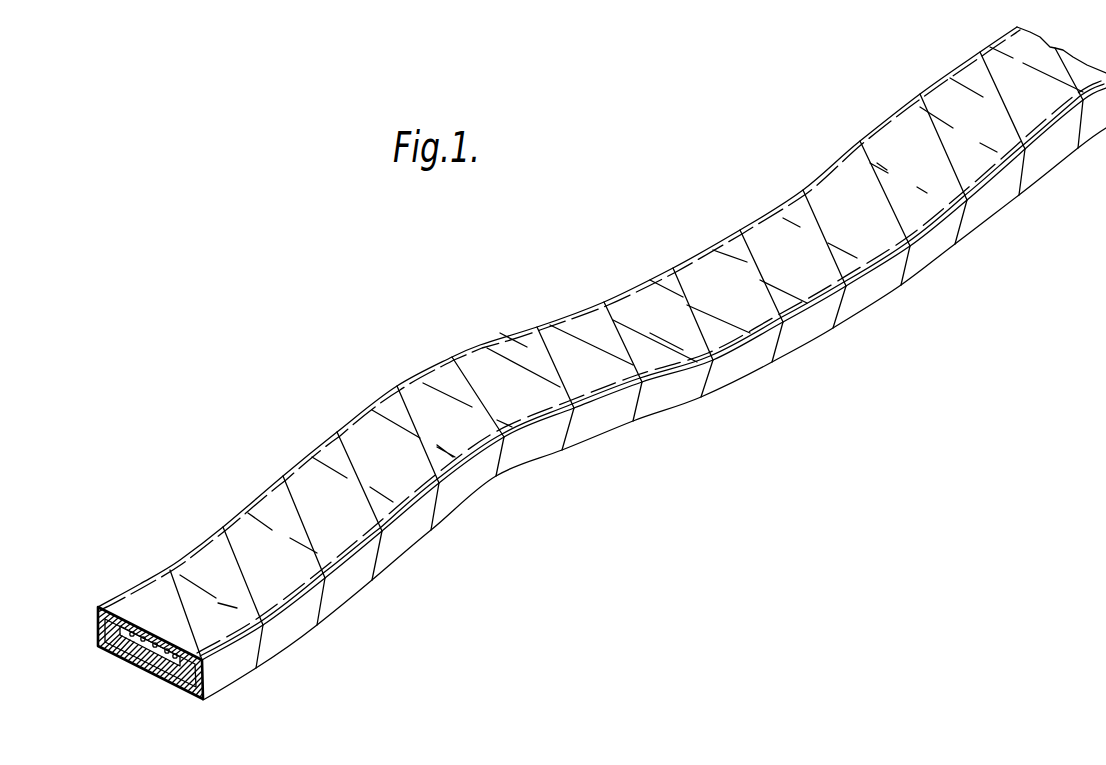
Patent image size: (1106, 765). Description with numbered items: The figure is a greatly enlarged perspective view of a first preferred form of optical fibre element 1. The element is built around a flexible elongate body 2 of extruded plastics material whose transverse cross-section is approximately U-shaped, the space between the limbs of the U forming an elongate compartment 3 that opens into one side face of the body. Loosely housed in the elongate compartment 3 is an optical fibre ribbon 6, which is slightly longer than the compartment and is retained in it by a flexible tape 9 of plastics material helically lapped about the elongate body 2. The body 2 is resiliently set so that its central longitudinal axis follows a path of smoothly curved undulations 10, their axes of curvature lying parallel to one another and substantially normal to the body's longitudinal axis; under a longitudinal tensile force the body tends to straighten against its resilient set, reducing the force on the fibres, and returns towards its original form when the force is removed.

The optical fibre element 1 is at (600, 383).
The flexible elongate body 2 is at (149, 632).
The elongate compartment 3 is at (147, 670).
The optical fibre ribbon 6 is at (151, 628).
The flexible tape 9 is at (442, 402).
The smoothly curved undulations 10 is at (527, 463).